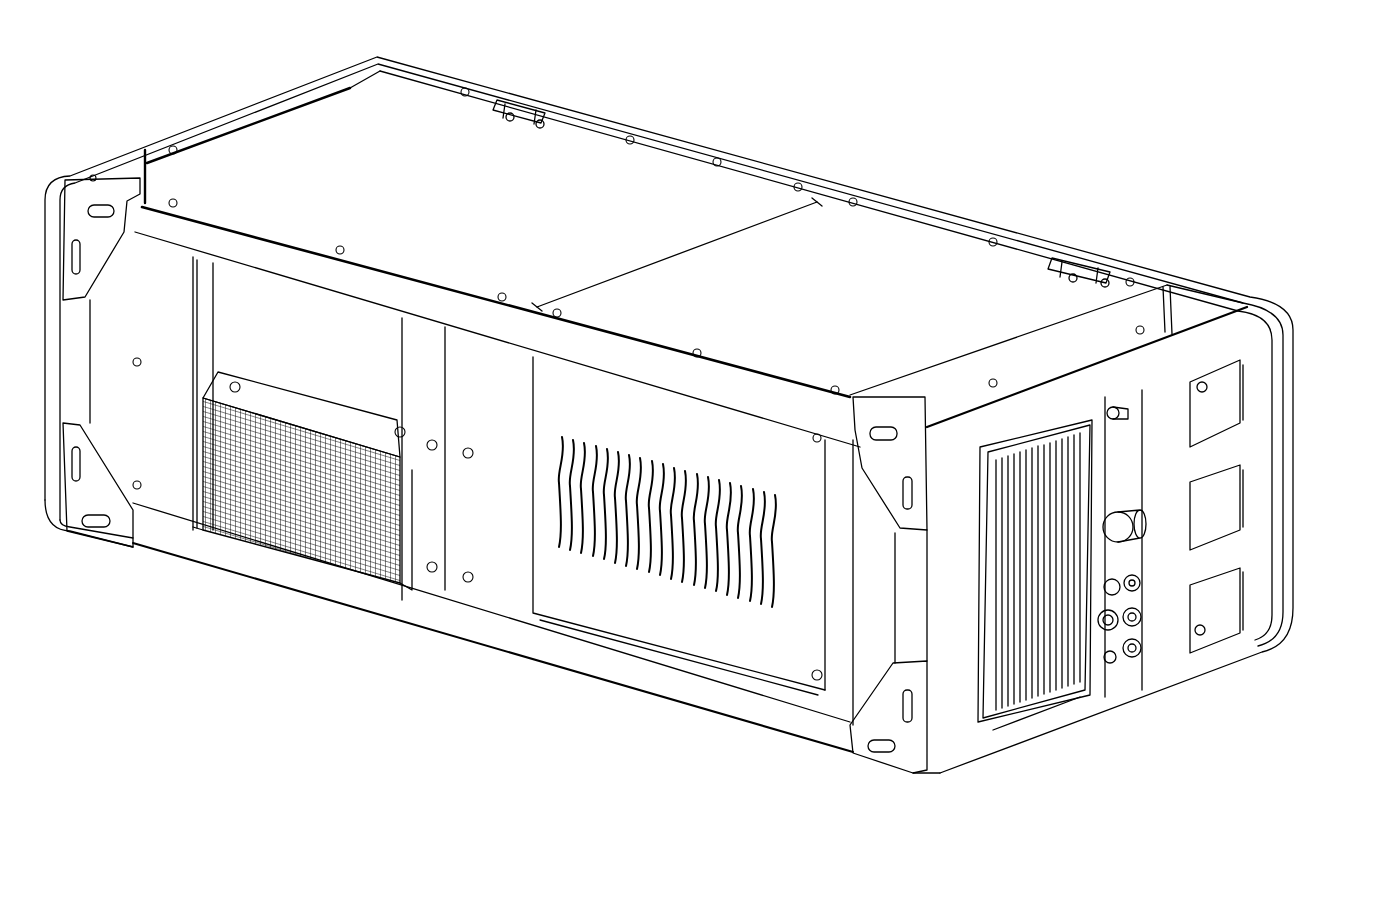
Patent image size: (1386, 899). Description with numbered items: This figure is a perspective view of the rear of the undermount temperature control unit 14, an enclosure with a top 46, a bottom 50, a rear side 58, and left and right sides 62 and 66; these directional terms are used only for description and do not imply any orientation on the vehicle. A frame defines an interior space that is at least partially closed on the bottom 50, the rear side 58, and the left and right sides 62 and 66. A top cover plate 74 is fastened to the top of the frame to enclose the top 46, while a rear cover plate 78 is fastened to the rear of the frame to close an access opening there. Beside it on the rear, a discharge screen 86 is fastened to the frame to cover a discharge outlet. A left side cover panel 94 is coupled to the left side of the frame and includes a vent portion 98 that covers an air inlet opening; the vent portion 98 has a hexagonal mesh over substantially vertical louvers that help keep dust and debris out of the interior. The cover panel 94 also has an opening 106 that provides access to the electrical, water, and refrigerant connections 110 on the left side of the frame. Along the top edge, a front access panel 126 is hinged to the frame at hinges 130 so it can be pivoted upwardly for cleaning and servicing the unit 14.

The undermount temperature control unit 14 is at (958, 120).
The top 46 is at (662, 176).
The bottom 50 is at (903, 792).
The rear side 58 is at (468, 660).
The left side 62 is at (1219, 655).
The right side 66 is at (118, 151).
The top cover plate 74 is at (840, 311).
The rear cover plate 78 is at (770, 658).
The discharge screen 86 is at (268, 407).
The left side cover panel 94 is at (1247, 437).
The vent portion 98 is at (1043, 673).
The opening 106 is at (1137, 563).
The connections 110 is at (1127, 679).
The front access panel 126 is at (1197, 287).
The hinges 130 is at (527, 105).